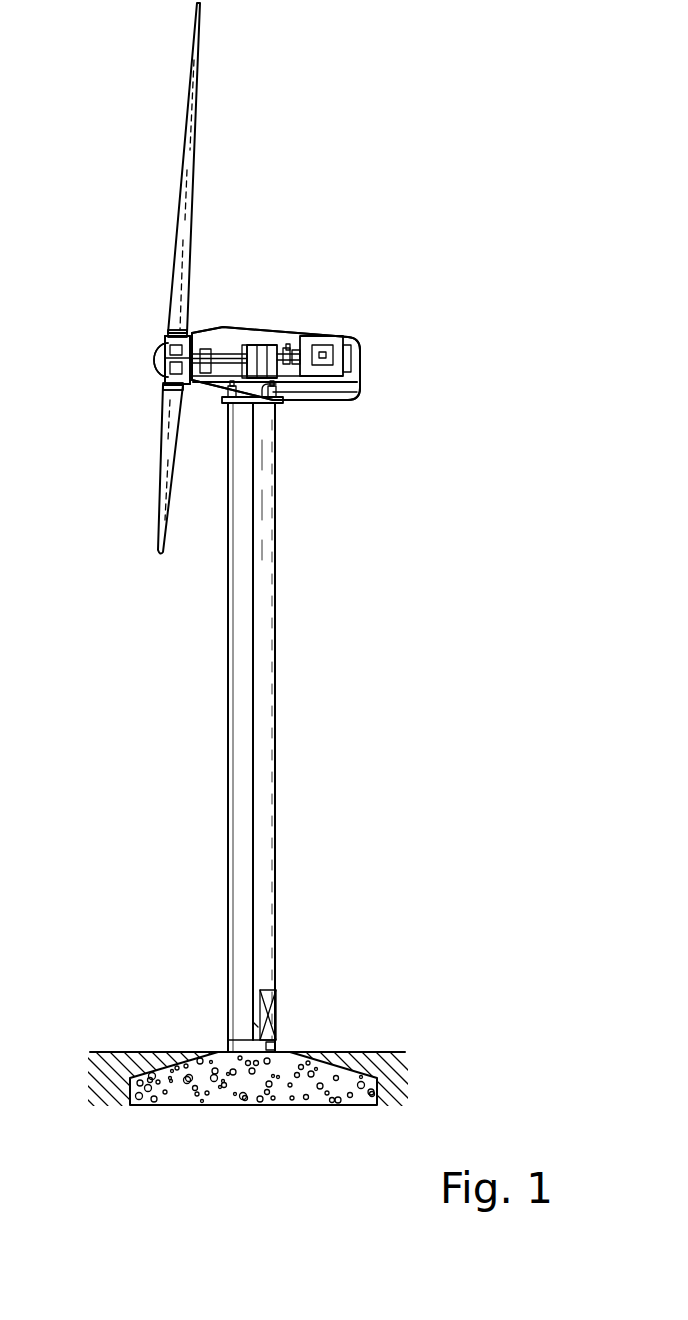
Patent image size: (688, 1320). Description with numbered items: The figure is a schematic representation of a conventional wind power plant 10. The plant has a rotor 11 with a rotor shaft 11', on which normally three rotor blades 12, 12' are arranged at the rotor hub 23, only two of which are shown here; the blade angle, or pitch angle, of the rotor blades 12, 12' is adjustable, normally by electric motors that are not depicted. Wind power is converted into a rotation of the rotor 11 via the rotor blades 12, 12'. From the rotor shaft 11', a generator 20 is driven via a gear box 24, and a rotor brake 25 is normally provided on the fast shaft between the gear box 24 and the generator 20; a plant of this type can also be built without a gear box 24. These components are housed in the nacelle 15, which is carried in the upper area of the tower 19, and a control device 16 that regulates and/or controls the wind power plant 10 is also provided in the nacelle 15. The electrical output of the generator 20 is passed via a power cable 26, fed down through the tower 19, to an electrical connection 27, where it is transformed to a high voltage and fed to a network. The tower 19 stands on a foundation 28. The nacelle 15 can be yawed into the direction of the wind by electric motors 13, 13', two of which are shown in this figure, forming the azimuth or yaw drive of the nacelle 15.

The wind power plant 10 is at (406, 493).
The rotor 11 is at (109, 386).
The rotor shaft 11' is at (225, 318).
The rotor blade 12 is at (139, 468).
The rotor blade 12' is at (227, 170).
The motor 13 is at (239, 438).
The motor 13' is at (320, 417).
The nacelle 15 is at (250, 344).
The control device 16 is at (360, 362).
The tower 19 is at (260, 824).
The generator 20 is at (340, 339).
The rotor hub 23 is at (165, 350).
The gear box 24 is at (262, 352).
The rotor brake 25 is at (293, 348).
The power cable 26 is at (255, 570).
The electrical connection 27 is at (272, 1013).
The foundation 28 is at (212, 1062).